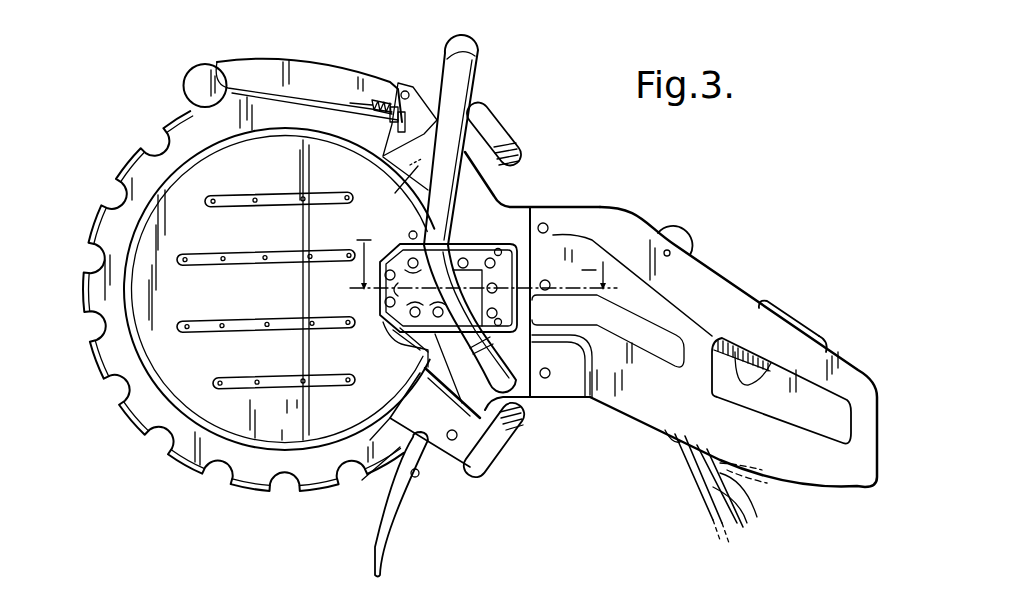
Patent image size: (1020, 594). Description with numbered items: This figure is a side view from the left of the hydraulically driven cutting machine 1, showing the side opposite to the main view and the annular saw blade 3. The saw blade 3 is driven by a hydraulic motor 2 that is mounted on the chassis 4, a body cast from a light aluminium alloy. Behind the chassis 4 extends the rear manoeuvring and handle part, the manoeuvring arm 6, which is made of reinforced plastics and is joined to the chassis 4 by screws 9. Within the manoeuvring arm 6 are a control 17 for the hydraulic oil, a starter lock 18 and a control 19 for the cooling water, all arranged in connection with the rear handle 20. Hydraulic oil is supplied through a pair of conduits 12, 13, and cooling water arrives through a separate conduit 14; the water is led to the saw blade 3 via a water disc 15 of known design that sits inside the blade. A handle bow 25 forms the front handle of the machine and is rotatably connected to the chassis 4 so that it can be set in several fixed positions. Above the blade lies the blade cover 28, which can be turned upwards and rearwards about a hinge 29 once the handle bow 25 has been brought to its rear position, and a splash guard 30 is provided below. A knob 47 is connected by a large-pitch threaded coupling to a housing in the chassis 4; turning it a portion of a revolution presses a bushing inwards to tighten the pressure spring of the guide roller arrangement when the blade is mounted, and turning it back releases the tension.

The cutting machine 1 is at (556, 157).
The hydraulic motor 2 is at (517, 309).
The saw blade 3 is at (213, 455).
The chassis 4 is at (503, 230).
The manoeuvring arm 6 is at (730, 270).
The screws 9 is at (547, 223).
The conduit for hydraulic oil 12 is at (692, 485).
The conduit for hydraulic oil 13 is at (740, 517).
The conduit for cooling water 14 is at (757, 490).
The water disc 15 is at (184, 383).
The control for hydraulic oil 17 is at (752, 367).
The starter lock 18 is at (806, 328).
The control for cooling water 19 is at (682, 243).
The rear handle 20 is at (757, 330).
The handle bow 25 is at (457, 87).
The blade cover 28 is at (316, 78).
The hinge 29 is at (406, 90).
The splash guard 30 is at (386, 531).
The knob 47 is at (507, 137).